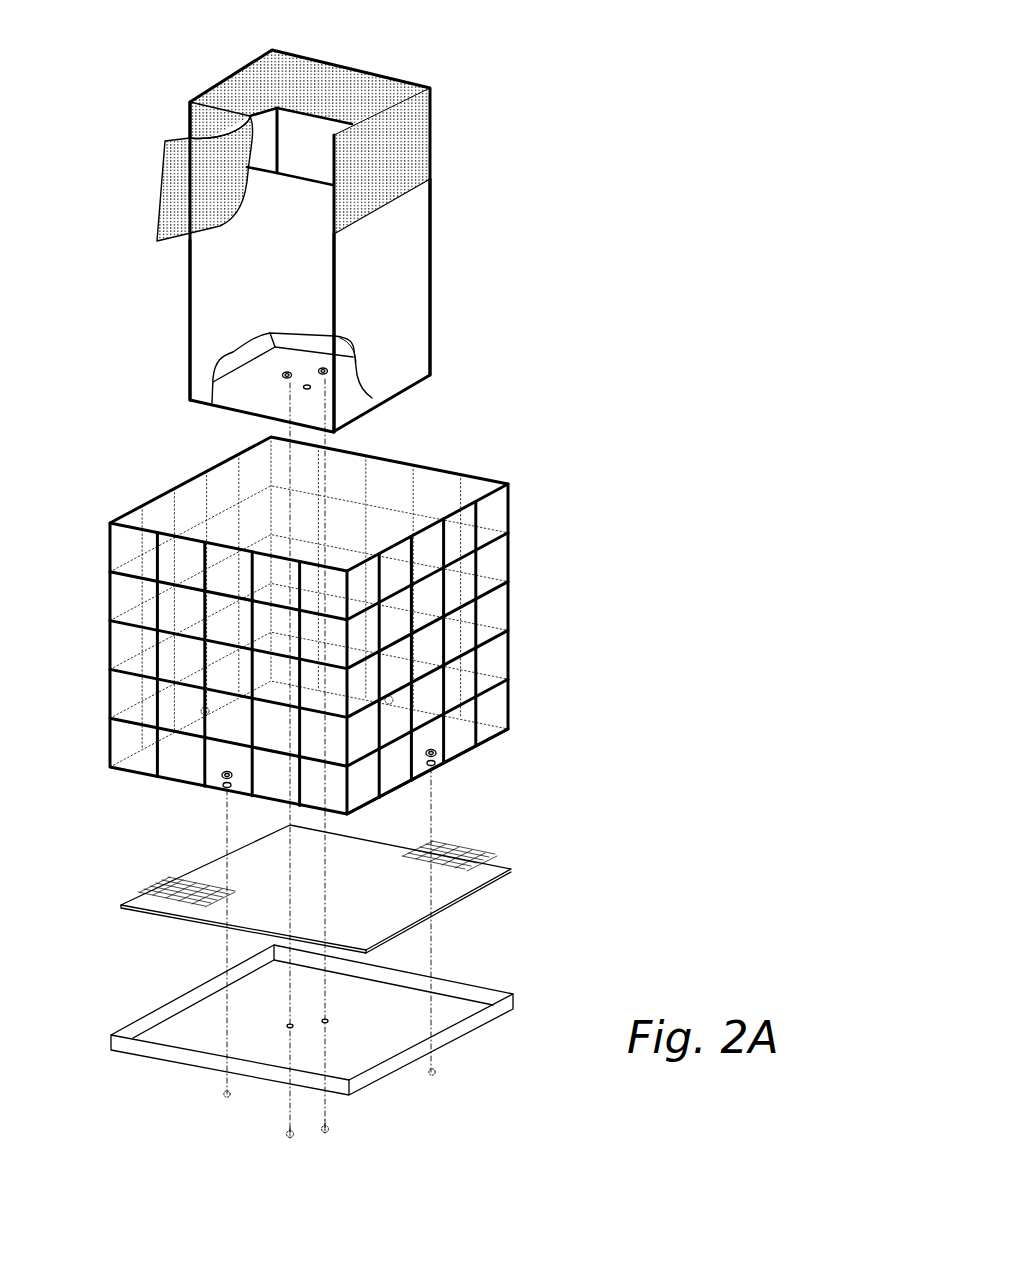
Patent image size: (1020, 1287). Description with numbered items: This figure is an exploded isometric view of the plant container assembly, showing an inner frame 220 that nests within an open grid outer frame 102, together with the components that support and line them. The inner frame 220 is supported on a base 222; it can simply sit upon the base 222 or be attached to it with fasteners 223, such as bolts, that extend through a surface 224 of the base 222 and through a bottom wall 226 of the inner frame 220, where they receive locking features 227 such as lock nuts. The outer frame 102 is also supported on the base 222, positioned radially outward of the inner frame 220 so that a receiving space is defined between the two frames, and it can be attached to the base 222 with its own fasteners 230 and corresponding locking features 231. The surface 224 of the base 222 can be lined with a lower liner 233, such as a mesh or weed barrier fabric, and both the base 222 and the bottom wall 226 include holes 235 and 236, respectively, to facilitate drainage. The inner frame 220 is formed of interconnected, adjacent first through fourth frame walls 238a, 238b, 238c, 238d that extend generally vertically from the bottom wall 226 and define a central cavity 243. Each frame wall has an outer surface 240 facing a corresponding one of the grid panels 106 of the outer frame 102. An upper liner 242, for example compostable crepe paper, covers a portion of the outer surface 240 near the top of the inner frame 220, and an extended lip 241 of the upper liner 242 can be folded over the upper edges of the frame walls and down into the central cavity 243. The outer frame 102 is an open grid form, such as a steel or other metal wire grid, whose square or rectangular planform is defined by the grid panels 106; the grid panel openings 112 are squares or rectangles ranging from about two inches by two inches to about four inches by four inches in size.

The outer frame 102 is at (343, 596).
The grid panels 106 is at (133, 525).
The grid panel openings 112 is at (364, 783).
The inner frame 220 is at (326, 224).
The base 222 is at (341, 1012).
The fasteners 223 is at (219, 776).
The surface 224 is at (198, 1020).
The bottom wall 226 is at (339, 408).
The locking features 227 is at (222, 1095).
The fasteners 230 is at (285, 375).
The locking features 231 is at (285, 1135).
The lower liner 233 is at (442, 906).
The holes 235 is at (305, 1025).
The holes 236 is at (307, 387).
The first frame wall 238a is at (413, 326).
The second frame wall 238b is at (205, 346).
The third frame wall 238c is at (266, 120).
The fourth frame wall 238d is at (310, 137).
The outer surface 240 is at (207, 272).
The extended lip 241 is at (297, 69).
The upper liner 242 is at (427, 115).
The central cavity 243 is at (304, 165).